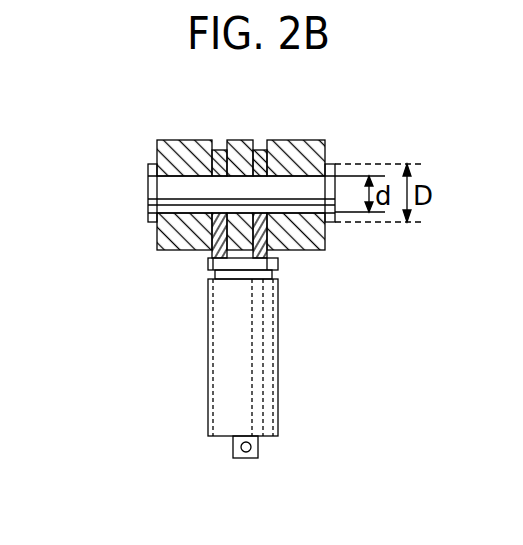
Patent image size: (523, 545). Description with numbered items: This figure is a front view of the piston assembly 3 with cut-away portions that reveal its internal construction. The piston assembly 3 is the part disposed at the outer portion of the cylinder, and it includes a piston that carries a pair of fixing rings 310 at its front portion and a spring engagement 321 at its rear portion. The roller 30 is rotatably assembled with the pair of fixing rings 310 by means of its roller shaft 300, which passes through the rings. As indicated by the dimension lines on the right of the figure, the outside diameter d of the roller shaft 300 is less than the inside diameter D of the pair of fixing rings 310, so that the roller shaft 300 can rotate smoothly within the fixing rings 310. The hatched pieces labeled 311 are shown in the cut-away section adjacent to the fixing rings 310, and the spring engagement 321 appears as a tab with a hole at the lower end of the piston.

The piston assembly 3 is at (110, 209).
The roller 30 is at (305, 148).
The fixing rings 310 is at (263, 149).
The lower seal pieces 311 is at (252, 219).
The roller shaft 300 is at (294, 190).
The spring engagement 321 is at (258, 448).